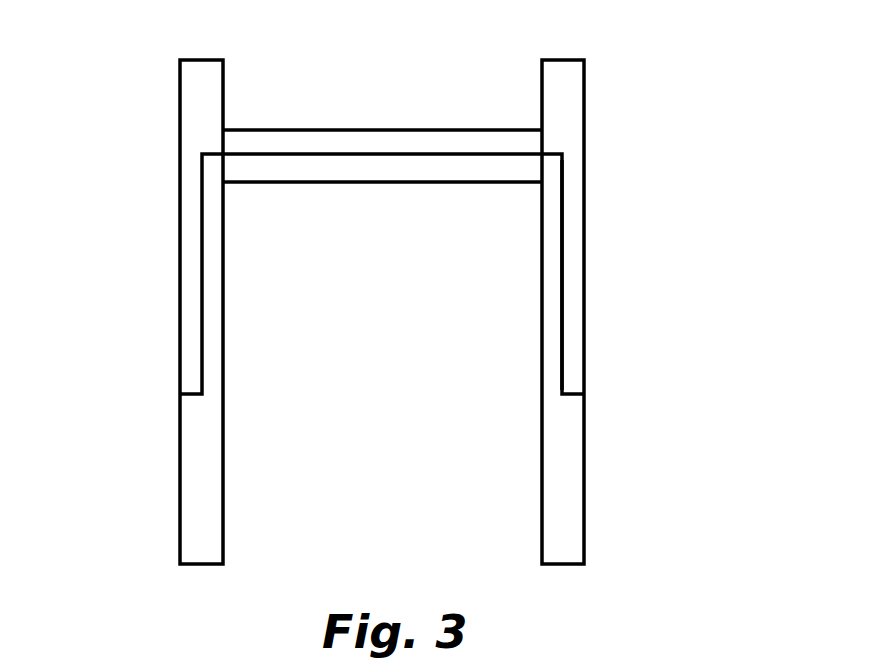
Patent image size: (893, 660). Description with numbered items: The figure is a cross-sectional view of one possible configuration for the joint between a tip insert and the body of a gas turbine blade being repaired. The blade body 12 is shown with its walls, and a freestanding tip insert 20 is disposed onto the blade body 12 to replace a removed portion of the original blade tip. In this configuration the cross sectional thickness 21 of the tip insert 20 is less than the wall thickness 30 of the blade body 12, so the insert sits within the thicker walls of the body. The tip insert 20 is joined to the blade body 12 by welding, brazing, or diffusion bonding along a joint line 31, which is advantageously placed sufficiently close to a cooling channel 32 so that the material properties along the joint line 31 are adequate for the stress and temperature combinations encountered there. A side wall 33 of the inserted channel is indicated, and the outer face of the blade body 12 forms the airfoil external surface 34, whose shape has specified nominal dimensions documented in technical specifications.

The blade body 12 is at (205, 471).
The tip insert 20 is at (192, 118).
The cross sectional thickness 21 is at (257, 269).
The wall thickness 30 is at (278, 413).
The joint line 31 is at (565, 212).
The cooling channel 32 is at (413, 408).
The side wall of channel 33 is at (583, 300).
The airfoil external surface 34 is at (584, 488).